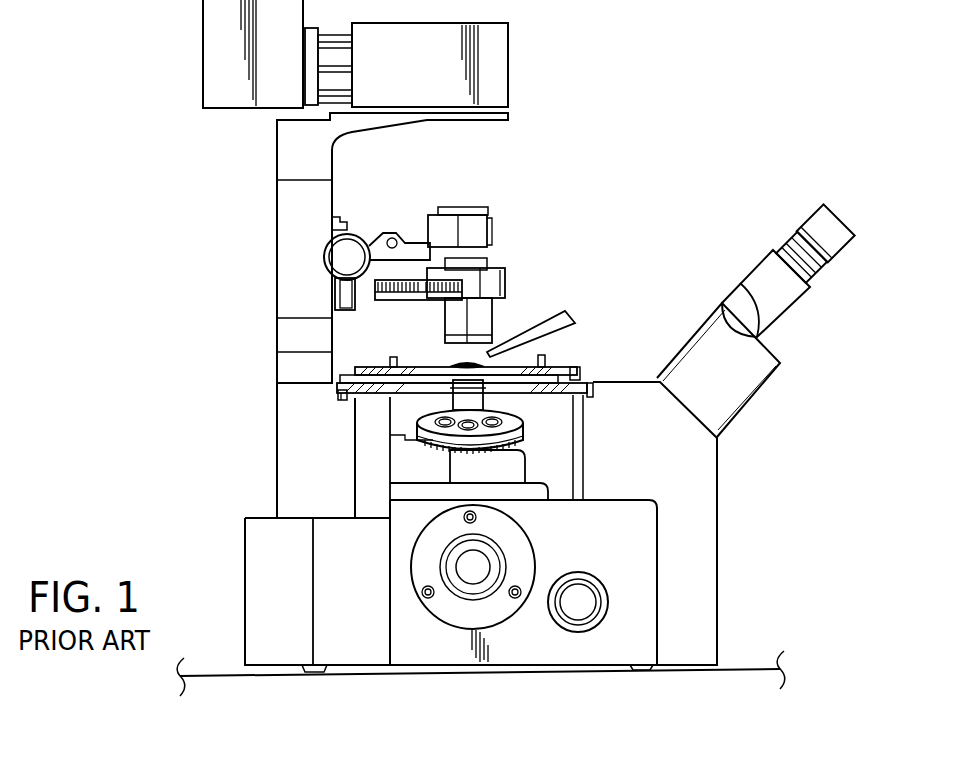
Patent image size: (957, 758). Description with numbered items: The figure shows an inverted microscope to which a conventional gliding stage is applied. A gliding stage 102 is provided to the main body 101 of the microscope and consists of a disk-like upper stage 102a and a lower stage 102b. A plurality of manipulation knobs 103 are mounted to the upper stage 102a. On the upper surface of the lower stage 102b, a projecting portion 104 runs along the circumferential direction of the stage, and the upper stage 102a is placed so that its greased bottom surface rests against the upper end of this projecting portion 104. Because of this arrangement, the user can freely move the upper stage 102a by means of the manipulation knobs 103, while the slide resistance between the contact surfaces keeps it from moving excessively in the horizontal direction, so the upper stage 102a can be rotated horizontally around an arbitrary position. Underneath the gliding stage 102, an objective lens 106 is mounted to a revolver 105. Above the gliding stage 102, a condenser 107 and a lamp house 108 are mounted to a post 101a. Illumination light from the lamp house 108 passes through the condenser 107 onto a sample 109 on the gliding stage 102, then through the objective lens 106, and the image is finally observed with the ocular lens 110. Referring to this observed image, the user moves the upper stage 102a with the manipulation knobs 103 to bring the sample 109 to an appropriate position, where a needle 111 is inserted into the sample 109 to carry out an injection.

The main body 101 is at (705, 520).
The post 101a is at (283, 228).
The gliding stage 102 is at (514, 348).
The upper stage 102a is at (578, 366).
The lower stage 102b is at (497, 367).
The manipulation knobs 103 is at (390, 360).
The projecting portion 104 is at (360, 400).
The revolver 105 is at (433, 440).
The objective lens 106 is at (452, 400).
The condenser 107 is at (493, 285).
The lamp house 108 is at (227, 97).
The sample 109 is at (465, 364).
The ocular lens 110 is at (814, 221).
The needle 111 is at (558, 315).